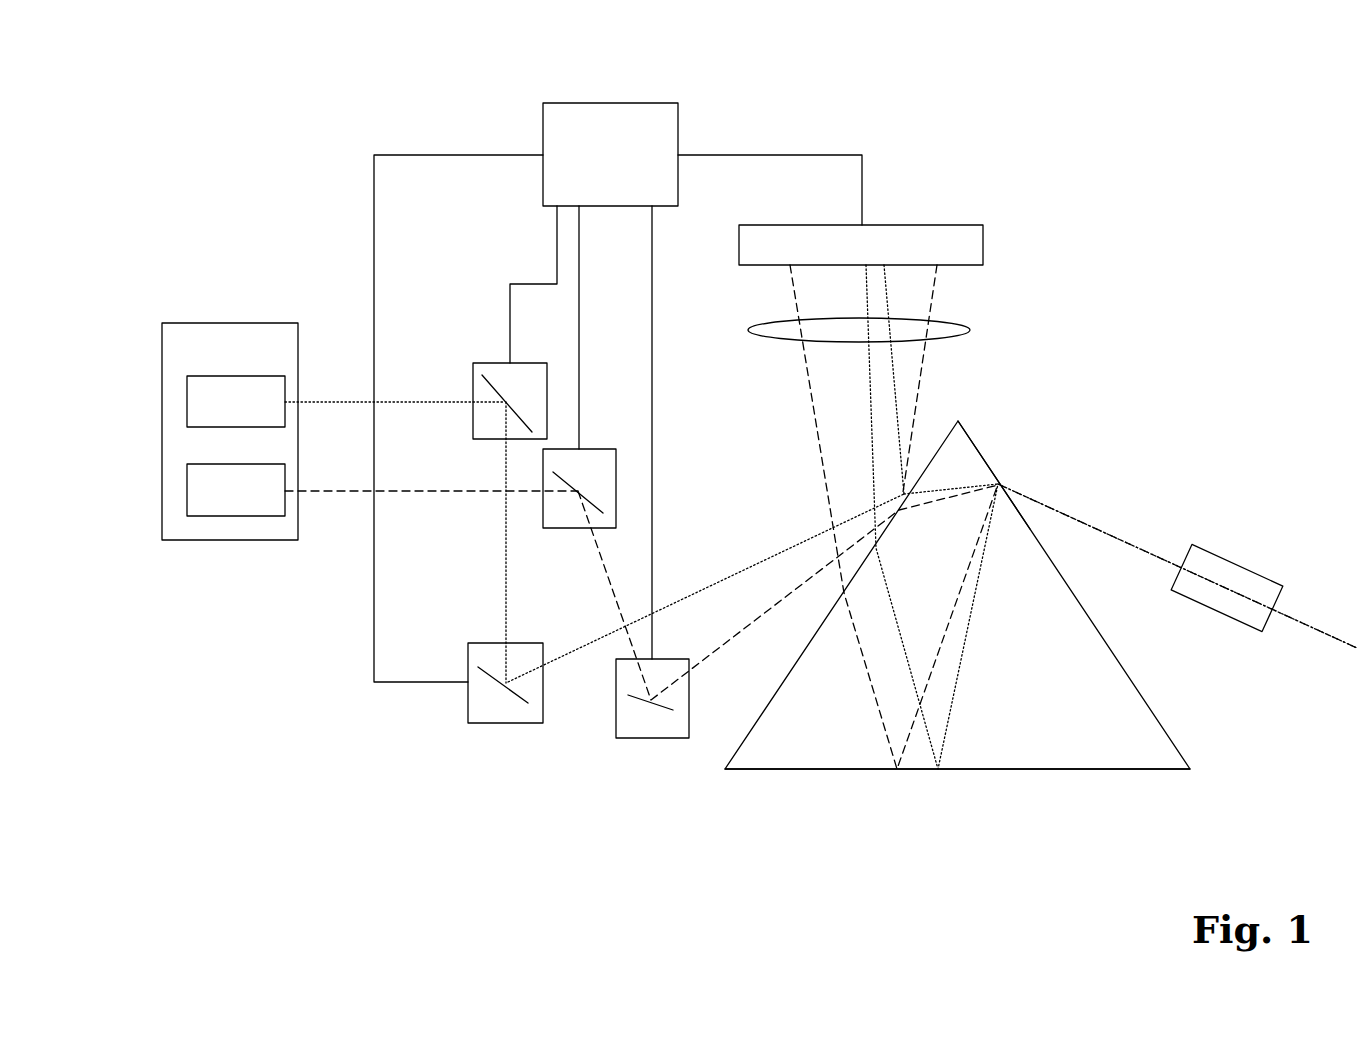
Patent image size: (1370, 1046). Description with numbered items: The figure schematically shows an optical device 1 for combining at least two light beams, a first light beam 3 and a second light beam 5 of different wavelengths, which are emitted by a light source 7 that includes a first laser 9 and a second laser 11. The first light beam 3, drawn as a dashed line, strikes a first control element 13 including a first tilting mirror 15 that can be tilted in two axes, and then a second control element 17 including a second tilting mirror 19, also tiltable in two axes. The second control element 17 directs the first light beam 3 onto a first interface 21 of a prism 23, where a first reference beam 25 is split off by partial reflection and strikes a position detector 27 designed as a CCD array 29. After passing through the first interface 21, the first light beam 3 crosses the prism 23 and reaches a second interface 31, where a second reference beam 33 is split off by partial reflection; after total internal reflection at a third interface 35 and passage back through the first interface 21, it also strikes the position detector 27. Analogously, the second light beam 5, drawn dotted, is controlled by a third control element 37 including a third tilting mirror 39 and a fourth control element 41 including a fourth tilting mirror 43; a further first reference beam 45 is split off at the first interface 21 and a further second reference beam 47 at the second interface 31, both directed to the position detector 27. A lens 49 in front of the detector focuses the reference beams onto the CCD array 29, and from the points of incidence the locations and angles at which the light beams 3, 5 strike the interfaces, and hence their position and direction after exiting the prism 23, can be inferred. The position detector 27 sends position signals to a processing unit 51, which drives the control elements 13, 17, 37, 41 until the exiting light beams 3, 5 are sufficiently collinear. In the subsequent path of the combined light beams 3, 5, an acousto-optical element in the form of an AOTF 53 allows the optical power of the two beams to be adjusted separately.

The optical device 1 is at (311, 143).
The first light beam 3 is at (472, 493).
The second light beam 5 is at (447, 402).
The light source 7 is at (230, 430).
The first laser 9 is at (237, 398).
The second laser 11 is at (223, 500).
The first control element 13 is at (628, 487).
The first tilting mirror 15 is at (597, 500).
The second control element 17 is at (657, 747).
The second tilting mirror 19 is at (663, 707).
The first interface 21 is at (788, 672).
The prism 23 is at (952, 635).
The first reference beam 25 is at (933, 303).
The position detector 27 is at (885, 168).
The CCD array 29 is at (922, 235).
The second interface 31 is at (980, 453).
The second reference beam 33 is at (822, 482).
The third interface 35 is at (857, 769).
The third control element 37 is at (513, 350).
The third tilting mirror 39 is at (527, 422).
The fourth control element 41 is at (482, 690).
The fourth tilting mirror 43 is at (493, 670).
The further first reference beam 45 is at (898, 368).
The further second reference beam 47 is at (873, 430).
The lens 49 is at (787, 327).
The processing unit 51 is at (642, 115).
The AOTF 53 is at (1253, 510).